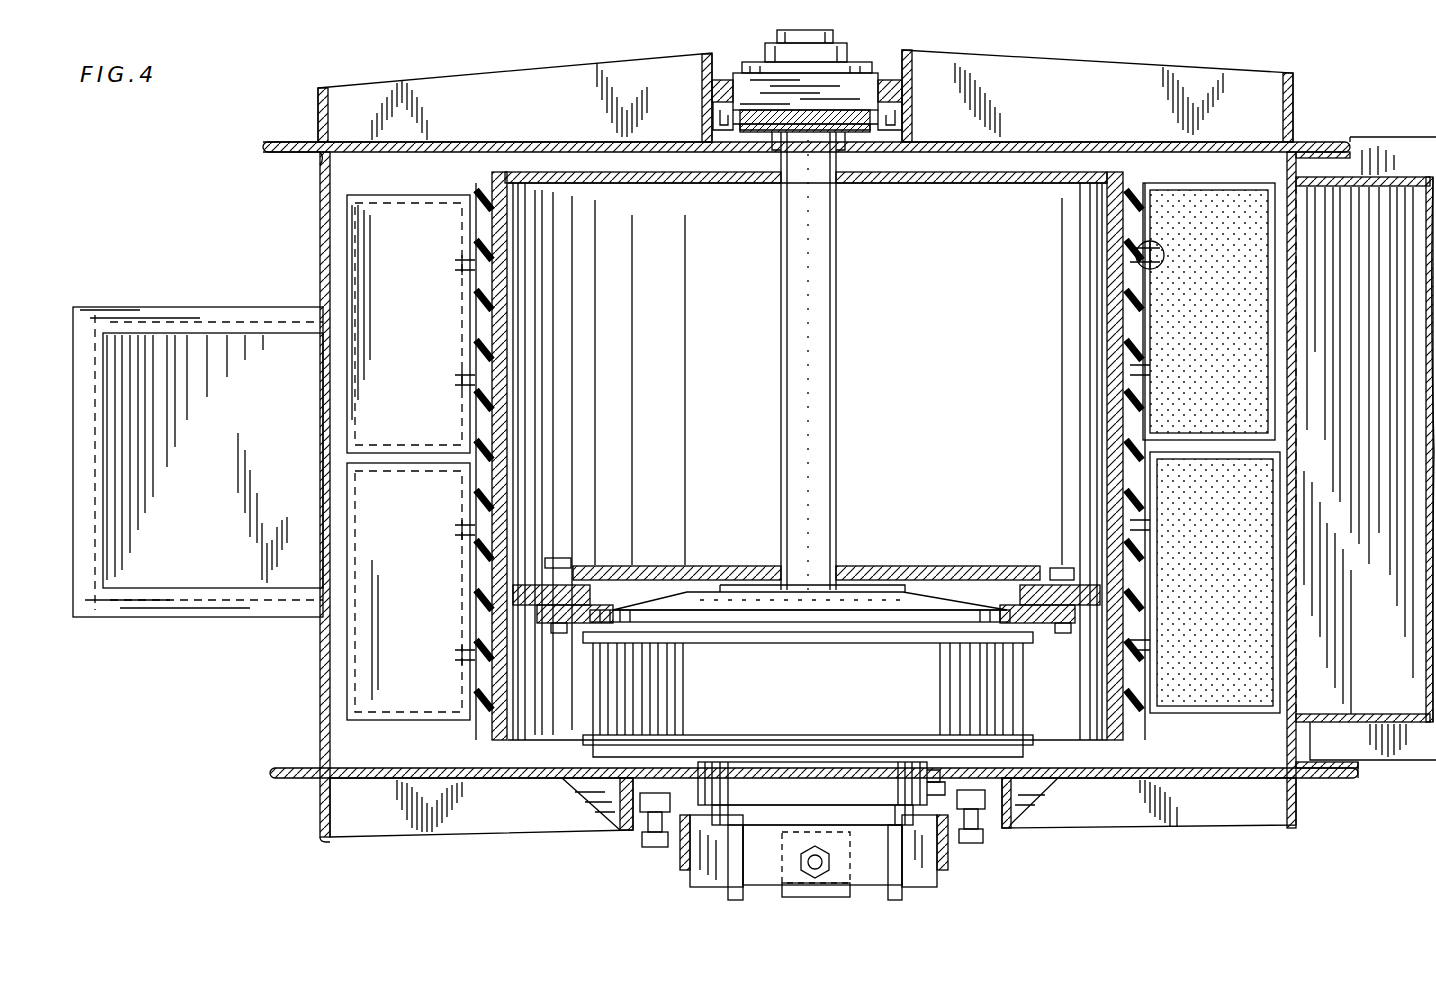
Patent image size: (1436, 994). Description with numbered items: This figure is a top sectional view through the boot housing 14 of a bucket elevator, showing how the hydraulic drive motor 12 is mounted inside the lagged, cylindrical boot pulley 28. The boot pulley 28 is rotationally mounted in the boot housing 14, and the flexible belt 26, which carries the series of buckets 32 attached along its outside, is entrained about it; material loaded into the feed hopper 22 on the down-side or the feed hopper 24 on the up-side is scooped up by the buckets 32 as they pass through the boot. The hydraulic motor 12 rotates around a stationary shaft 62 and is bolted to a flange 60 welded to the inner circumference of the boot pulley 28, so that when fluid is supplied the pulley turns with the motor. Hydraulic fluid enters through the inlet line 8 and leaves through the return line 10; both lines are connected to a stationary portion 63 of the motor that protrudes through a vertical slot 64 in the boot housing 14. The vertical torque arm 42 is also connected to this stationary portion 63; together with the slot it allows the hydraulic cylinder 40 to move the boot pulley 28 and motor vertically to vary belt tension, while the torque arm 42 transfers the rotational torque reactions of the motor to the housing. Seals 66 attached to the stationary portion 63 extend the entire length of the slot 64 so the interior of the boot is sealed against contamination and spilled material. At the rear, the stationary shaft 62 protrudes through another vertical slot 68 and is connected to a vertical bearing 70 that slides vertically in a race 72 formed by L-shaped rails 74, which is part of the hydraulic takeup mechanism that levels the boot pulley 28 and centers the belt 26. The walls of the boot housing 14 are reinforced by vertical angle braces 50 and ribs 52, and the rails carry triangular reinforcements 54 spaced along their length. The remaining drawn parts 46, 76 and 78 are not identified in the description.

The inlet line 8 is at (743, 895).
The return line 10 is at (897, 898).
The hydraulic drive motor 12 is at (1025, 694).
The boot housing 14 is at (1165, 140).
The feed hopper 22 is at (236, 585).
The feed hopper 24 is at (1390, 245).
The flexible belt 26 is at (480, 185).
The boot pulley 28 is at (1107, 300).
The buckets 32 is at (400, 195).
The hydraulic cylinder 40 is at (815, 900).
The torque arm 42 is at (700, 870).
The bolt 46 is at (655, 820).
The vertical angle braces 50 is at (322, 828).
The ribs 52 is at (522, 818).
The triangular reinforcements 54 is at (598, 800).
The flange 60 is at (565, 575).
The stationary shaft 62 is at (781, 428).
The stationary portion 63 is at (815, 772).
The vertical slot 64 is at (942, 792).
The seals 66 is at (945, 770).
The vertical slot 68 is at (772, 160).
The vertical bearing 70 is at (762, 90).
The race 72 is at (712, 90).
The L-shaped rails 74 is at (713, 118).
The flange 76 is at (318, 118).
The top cover 78 is at (500, 120).